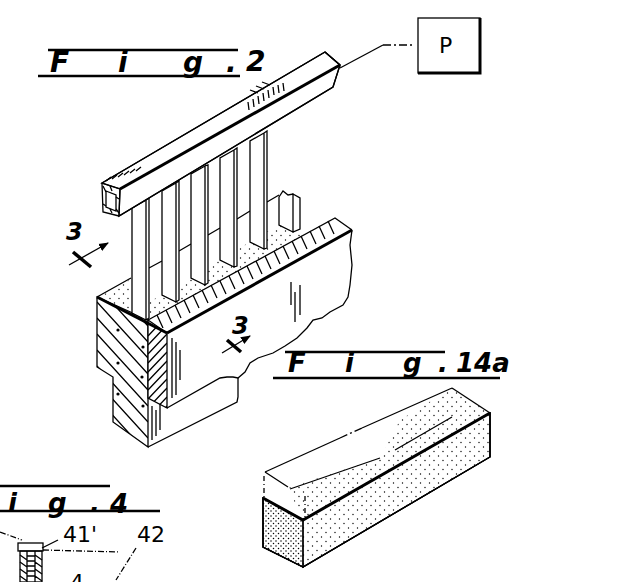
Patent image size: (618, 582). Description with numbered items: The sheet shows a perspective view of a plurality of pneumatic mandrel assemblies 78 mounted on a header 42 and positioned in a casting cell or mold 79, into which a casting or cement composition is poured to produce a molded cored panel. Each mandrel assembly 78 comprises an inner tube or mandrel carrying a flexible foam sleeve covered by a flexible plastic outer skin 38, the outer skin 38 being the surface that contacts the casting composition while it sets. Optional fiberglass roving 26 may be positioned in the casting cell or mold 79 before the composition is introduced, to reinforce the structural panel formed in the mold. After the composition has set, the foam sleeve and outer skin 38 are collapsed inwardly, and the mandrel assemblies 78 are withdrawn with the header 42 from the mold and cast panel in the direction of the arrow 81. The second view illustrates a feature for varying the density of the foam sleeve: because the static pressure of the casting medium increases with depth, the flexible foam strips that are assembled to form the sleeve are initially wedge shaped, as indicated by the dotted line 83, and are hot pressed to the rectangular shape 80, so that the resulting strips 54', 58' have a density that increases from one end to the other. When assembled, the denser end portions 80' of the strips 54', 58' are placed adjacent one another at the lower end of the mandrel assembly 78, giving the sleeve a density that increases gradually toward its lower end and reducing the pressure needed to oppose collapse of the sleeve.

In FIG. 2, the roving 26 is at (141, 407).
In FIG. 2, the flexible plastic outer skin 38 is at (240, 187).
In FIG. 2, the header 42 is at (161, 151).
In FIG. 2, the pneumatic mandrel assembly 78 is at (168, 246).
In FIG. 2, the casting cell or mold 79 is at (360, 241).
In FIG. 2, the arrow 81 is at (323, 106).
In FIG. 14a, the rectangular shape 80 is at (341, 442).
In FIG. 14a, the denser end portion 80' is at (256, 532).
In FIG. 14a, the wedge shaped flexible foam strip 83 is at (306, 455).
In FIG. 14a, the flexible foam strip 54' is at (376, 477).
In FIG. 14a, the flexible foam strip 58' is at (376, 490).